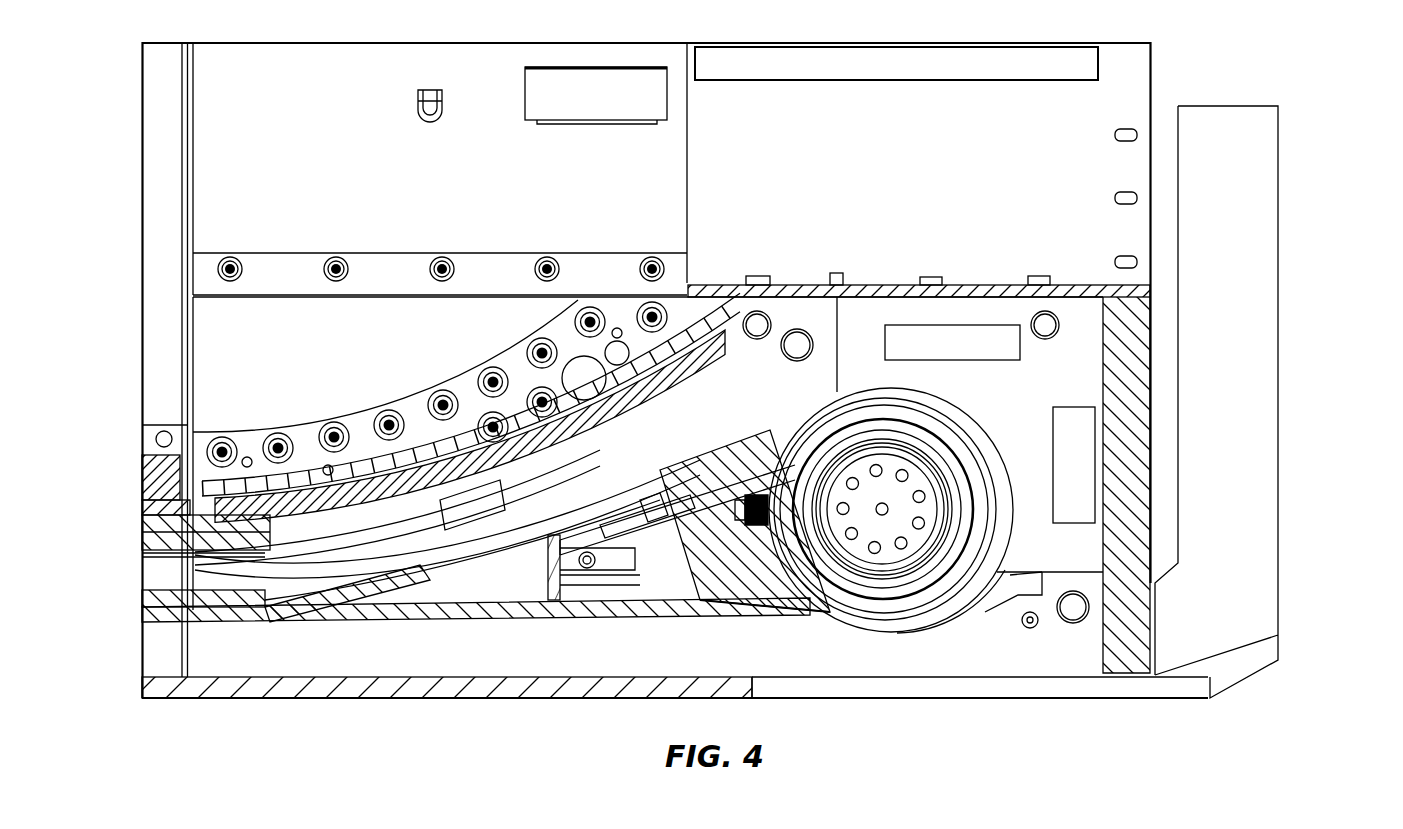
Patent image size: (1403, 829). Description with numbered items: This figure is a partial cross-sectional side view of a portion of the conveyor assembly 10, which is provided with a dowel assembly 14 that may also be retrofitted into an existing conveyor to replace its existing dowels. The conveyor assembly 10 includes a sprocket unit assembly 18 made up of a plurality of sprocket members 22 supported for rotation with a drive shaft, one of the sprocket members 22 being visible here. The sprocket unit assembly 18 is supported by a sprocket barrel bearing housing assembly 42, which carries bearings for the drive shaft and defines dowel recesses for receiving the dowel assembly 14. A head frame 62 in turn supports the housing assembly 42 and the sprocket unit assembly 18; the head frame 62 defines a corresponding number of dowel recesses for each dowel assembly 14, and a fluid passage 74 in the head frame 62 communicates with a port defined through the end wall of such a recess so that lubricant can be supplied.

The conveyor assembly 10 is at (710, 370).
The dowel assembly 14 is at (742, 486).
The sprocket unit assembly 18 is at (950, 426).
The sprocket member 22 is at (973, 473).
The sprocket barrel bearing housing assembly 42 is at (828, 418).
The head frame 62 is at (740, 600).
The fluid passage 74 is at (665, 538).